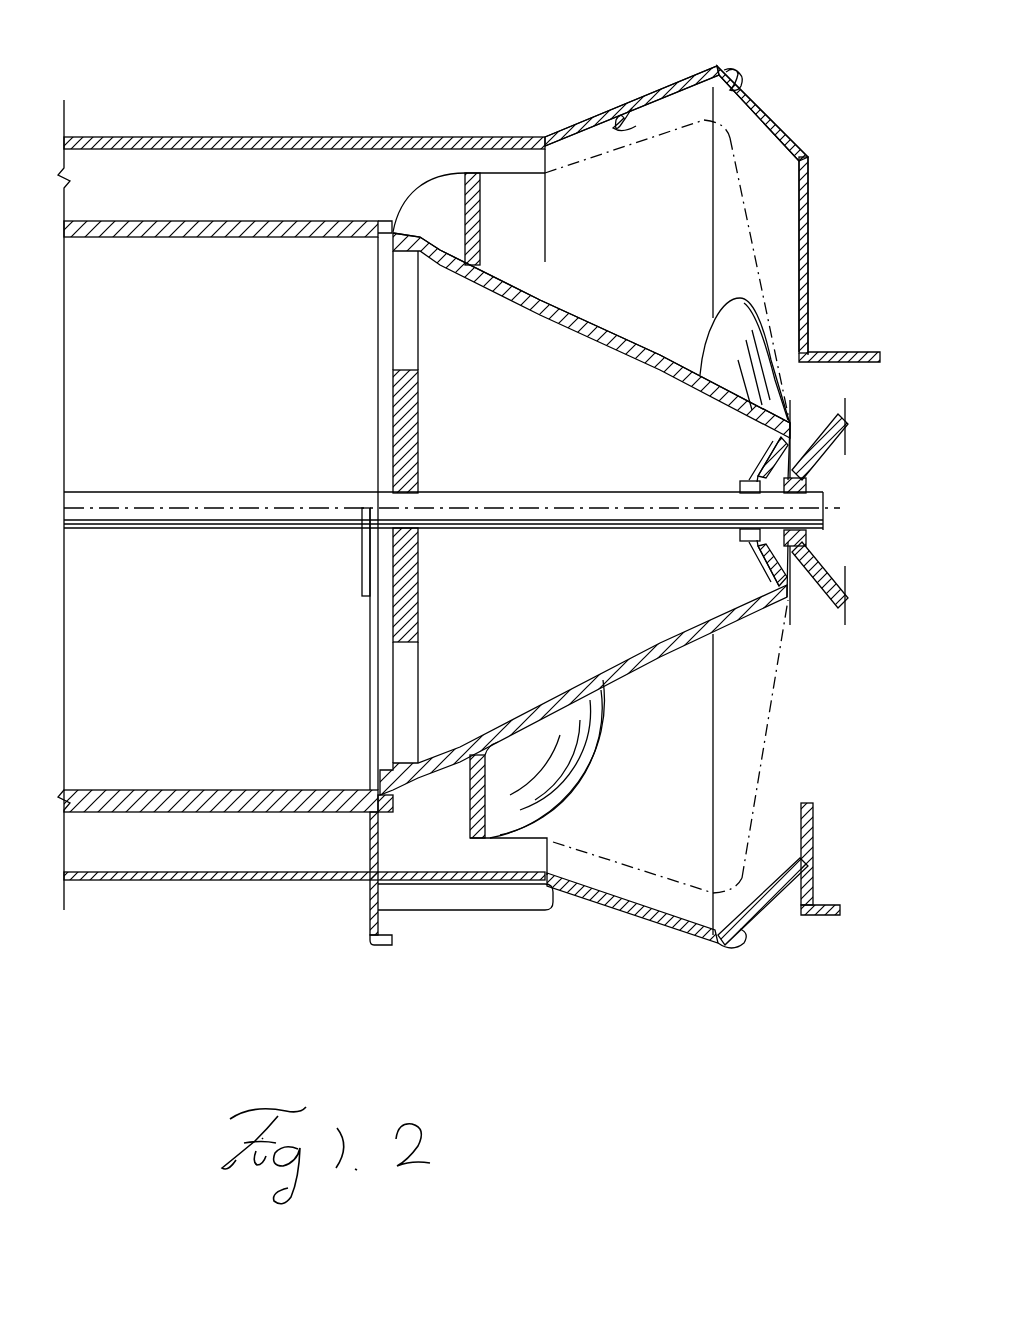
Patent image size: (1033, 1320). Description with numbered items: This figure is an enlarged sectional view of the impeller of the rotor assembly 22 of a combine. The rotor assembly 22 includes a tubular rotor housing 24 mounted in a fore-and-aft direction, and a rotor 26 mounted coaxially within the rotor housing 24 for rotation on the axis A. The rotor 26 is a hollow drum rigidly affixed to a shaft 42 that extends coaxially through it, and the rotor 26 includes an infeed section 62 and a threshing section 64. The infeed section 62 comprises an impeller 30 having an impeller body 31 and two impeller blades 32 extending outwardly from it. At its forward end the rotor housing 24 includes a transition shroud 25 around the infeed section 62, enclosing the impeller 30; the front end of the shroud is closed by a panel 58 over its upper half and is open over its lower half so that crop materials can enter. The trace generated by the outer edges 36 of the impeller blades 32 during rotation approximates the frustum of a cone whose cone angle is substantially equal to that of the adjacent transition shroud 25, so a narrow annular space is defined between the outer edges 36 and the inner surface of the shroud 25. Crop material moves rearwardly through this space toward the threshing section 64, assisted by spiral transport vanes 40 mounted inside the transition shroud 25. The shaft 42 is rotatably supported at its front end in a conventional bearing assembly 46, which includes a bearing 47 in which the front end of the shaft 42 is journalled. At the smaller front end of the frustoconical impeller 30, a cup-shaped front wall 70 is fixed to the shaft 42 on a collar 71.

The rotor assembly 22 is at (362, 124).
The rotor housing 24 is at (250, 882).
The transition shroud 25 is at (665, 935).
The rotor 26 is at (262, 806).
The impeller 30 is at (598, 344).
The impeller body 31 is at (513, 197).
The impeller blades 32 is at (716, 348).
The outer edge 36 is at (527, 823).
The spiral transport vanes 40 is at (640, 122).
The shaft 42 is at (285, 538).
The bearing assembly 46 is at (838, 484).
The bearing 47 is at (806, 540).
The panel 58 is at (810, 254).
The infeed section 62 is at (575, 312).
The threshing section 64 is at (272, 222).
The front wall 70 is at (745, 546).
The collar 71 is at (742, 476).
The axis A is at (265, 492).